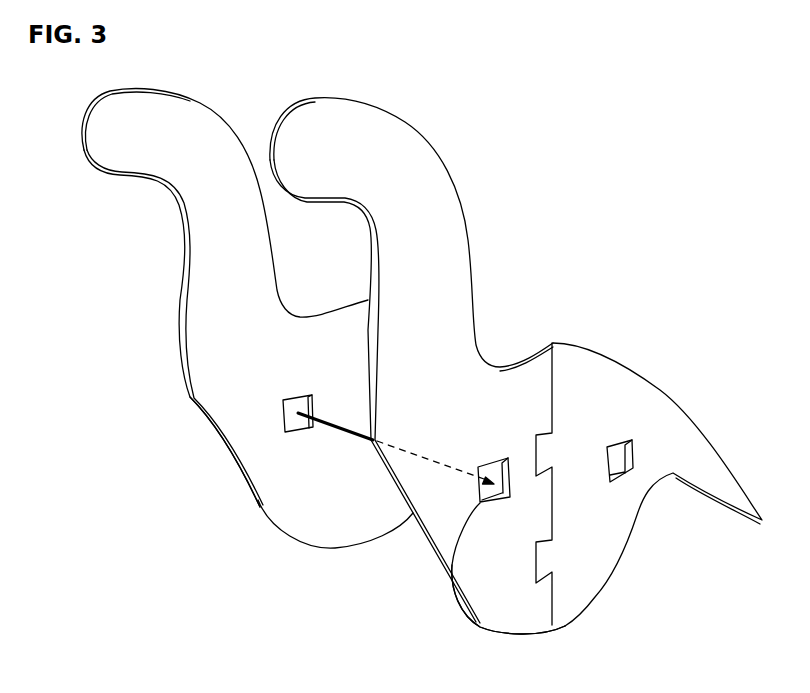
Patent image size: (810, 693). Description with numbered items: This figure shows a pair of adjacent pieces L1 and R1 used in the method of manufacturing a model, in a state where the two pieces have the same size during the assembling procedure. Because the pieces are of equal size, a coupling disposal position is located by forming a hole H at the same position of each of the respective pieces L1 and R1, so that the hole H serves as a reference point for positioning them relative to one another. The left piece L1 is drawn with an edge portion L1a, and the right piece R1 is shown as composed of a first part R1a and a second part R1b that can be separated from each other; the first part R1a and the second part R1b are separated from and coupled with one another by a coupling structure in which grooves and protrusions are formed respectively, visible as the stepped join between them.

The piece L1 is at (218, 406).
The left side panel edge portion L1a is at (238, 440).
The hole H is at (285, 433).
The piece R1 is at (440, 509).
The first part R1a is at (497, 585).
The second part R1b is at (618, 548).